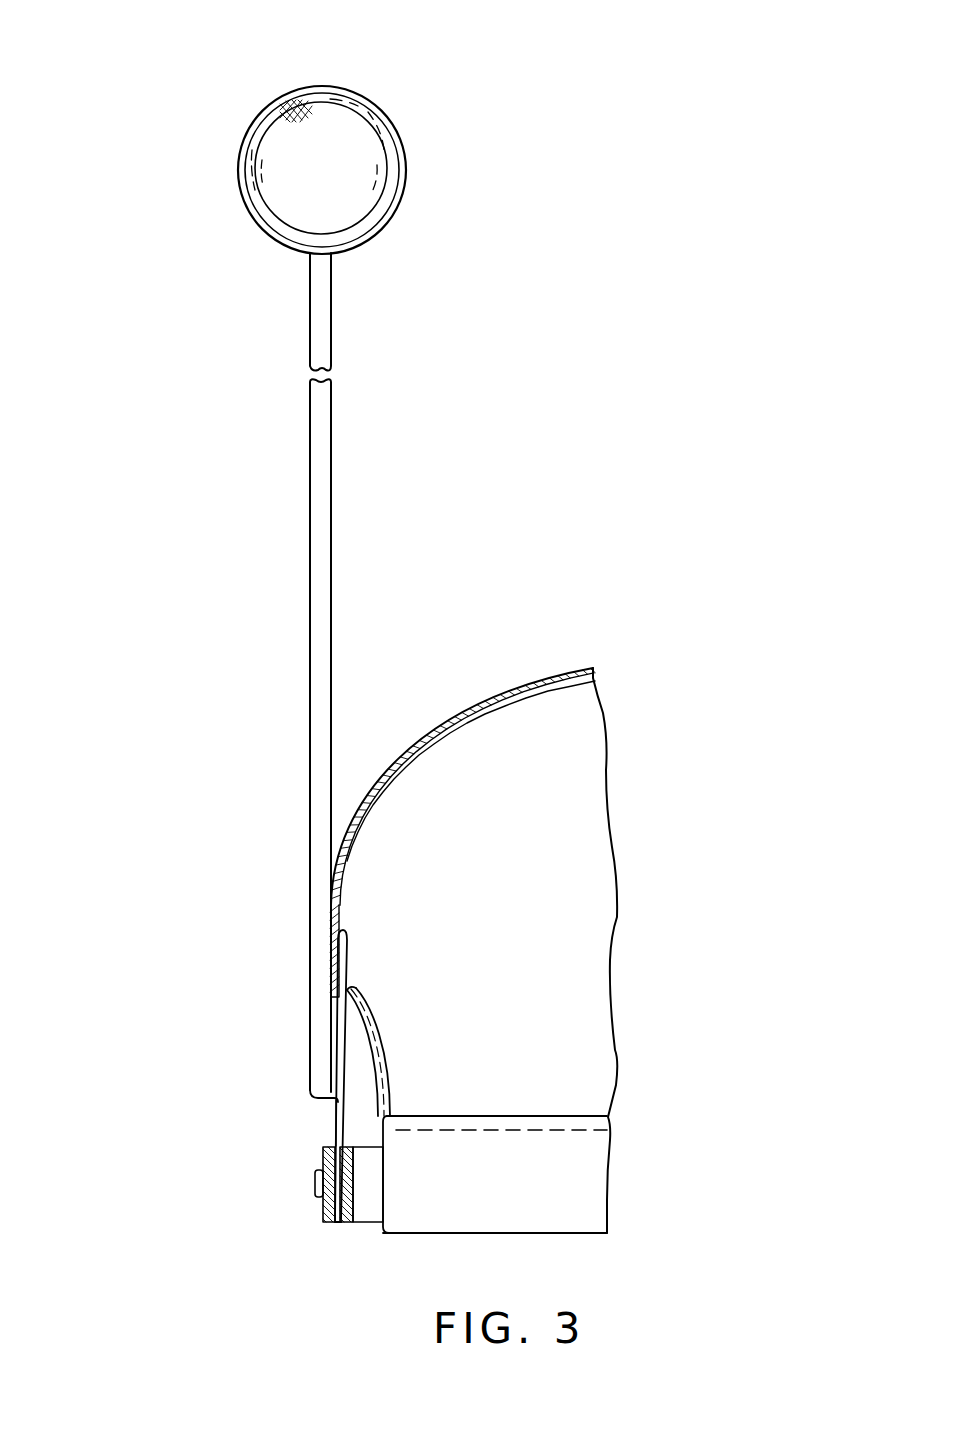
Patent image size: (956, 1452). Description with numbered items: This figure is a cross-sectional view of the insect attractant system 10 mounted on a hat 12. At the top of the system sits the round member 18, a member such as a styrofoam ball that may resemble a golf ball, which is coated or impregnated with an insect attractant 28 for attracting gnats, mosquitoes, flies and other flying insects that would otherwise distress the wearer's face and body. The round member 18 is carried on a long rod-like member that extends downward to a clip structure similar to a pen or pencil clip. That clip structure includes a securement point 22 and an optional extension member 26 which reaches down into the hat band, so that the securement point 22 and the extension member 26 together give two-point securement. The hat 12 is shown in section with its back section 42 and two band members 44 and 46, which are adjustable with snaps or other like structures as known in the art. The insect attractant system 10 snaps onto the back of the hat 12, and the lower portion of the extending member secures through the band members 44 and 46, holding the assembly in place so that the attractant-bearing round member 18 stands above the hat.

The insect attractant system 10 is at (272, 573).
The hat 12 is at (558, 712).
The round member 18 is at (268, 135).
The securement point 22 is at (333, 1093).
The extension member 26 is at (334, 1128).
The insect attractant 28 is at (302, 107).
The back section 42 is at (333, 900).
The band member 44 is at (323, 1210).
The band member 46 is at (348, 1228).